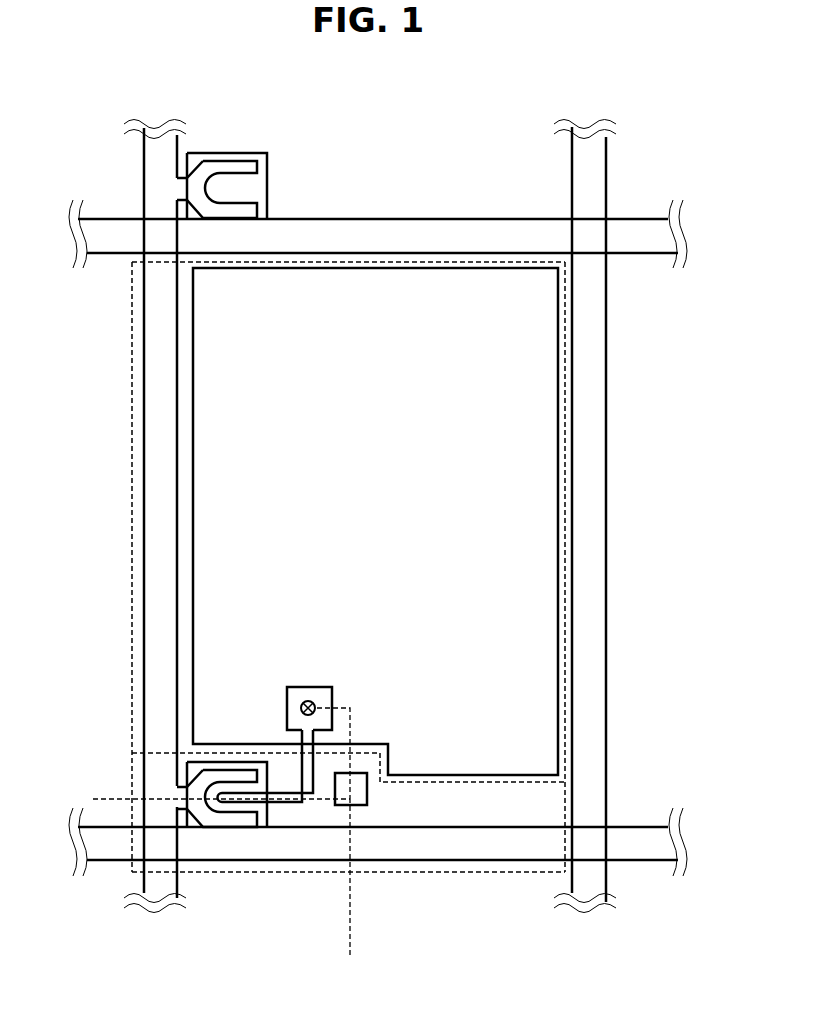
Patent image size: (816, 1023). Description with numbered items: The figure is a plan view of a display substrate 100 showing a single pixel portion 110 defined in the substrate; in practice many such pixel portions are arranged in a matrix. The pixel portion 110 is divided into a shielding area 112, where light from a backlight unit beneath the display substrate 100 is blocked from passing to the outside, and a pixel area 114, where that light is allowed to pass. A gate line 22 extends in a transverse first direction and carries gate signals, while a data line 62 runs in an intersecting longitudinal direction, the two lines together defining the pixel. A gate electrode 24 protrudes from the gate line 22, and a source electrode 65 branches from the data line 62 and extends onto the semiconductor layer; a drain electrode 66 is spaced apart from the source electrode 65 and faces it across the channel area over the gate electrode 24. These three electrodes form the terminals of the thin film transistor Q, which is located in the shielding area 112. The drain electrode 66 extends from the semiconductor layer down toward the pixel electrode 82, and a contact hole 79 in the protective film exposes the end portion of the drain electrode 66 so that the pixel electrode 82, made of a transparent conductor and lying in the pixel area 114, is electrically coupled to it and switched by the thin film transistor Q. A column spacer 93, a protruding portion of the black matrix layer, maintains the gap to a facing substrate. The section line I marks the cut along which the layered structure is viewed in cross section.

The display substrate 100 is at (387, 140).
The gate line 22 is at (198, 850).
The data line 62 is at (150, 543).
The pixel electrode 82 is at (192, 403).
The gate electrode 24 is at (262, 825).
The source electrode 65 is at (237, 830).
The drain electrode 66 is at (408, 850).
The contact hole 79 is at (312, 686).
The column spacer 93 is at (350, 808).
The pixel portion 110 is at (463, 947).
The shielding area 112 is at (472, 873).
The pixel area 114 is at (512, 784).
The thin film transistor Q is at (237, 748).
The section line I-I' I is at (224, 846).